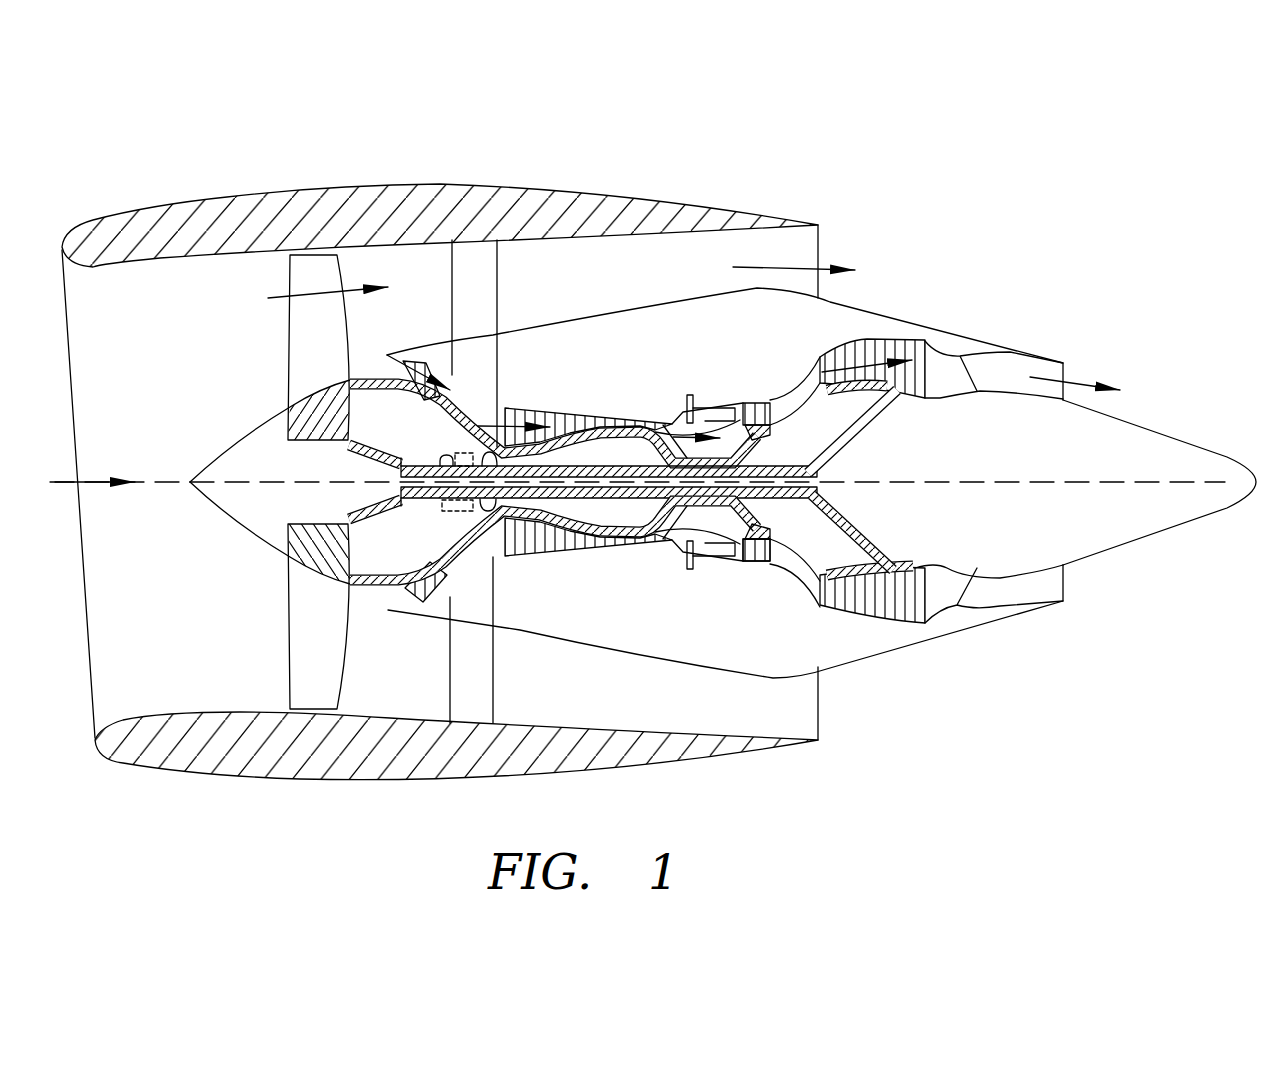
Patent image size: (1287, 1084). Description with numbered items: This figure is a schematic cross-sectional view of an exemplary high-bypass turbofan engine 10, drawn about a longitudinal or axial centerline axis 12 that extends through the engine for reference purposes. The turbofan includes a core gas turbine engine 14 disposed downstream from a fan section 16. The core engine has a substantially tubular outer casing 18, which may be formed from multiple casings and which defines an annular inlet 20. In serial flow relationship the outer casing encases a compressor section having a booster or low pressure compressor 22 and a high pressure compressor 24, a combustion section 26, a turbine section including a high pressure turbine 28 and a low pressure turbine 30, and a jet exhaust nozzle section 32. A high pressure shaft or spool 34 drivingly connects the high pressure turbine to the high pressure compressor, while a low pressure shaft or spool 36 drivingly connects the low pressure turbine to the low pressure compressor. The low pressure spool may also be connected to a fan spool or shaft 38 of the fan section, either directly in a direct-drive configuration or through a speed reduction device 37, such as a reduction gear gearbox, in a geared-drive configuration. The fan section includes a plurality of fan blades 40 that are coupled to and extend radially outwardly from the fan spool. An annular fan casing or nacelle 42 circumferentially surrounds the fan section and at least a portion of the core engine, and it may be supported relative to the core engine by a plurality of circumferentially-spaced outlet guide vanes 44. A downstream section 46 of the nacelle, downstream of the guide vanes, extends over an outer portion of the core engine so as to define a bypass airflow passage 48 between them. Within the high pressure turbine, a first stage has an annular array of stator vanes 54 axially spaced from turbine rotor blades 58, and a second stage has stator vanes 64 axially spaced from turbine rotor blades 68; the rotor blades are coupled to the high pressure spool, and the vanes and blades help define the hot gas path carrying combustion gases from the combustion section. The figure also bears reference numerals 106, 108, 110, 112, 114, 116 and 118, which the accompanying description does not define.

The turbofan engine 10 is at (646, 473).
The longitudinal centerline axis 12 is at (985, 483).
The gas turbine engine 14 is at (663, 365).
The fan section 16 is at (365, 165).
The outer casing 18 is at (673, 663).
The annular inlet 20 is at (397, 598).
The low pressure compressor 22 is at (454, 574).
The high pressure compressor 24 is at (526, 548).
The combustion section 26 is at (707, 560).
The high pressure turbine 28 is at (777, 555).
The low pressure turbine 30 is at (913, 625).
The jet exhaust nozzle section 32 is at (1065, 367).
The high pressure shaft or spool 34 is at (750, 427).
The low pressure shaft or spool 36 is at (442, 456).
The speed reduction device 37 is at (468, 453).
The fan spool 38 is at (310, 442).
The fan blades 40 is at (287, 657).
The nacelle 42 is at (348, 778).
The outlet guide vanes 44 is at (499, 262).
The downstream section of the nacelle 46 is at (645, 193).
The bypass airflow passage 48 is at (605, 285).
The stator vanes 54 is at (733, 570).
The turbine rotor blades 58 is at (748, 563).
The stator vanes 64 is at (753, 560).
The turbine rotor blades 68 is at (770, 573).
The inlet air 106 is at (95, 470).
The bypass air flow 108 is at (305, 296).
The core air flow 110 is at (370, 366).
The compressed air 112 is at (687, 397).
The combustion gases 114 is at (760, 403).
The fan nozzle exhaust 116 is at (823, 362).
The core exhaust 118 is at (840, 345).